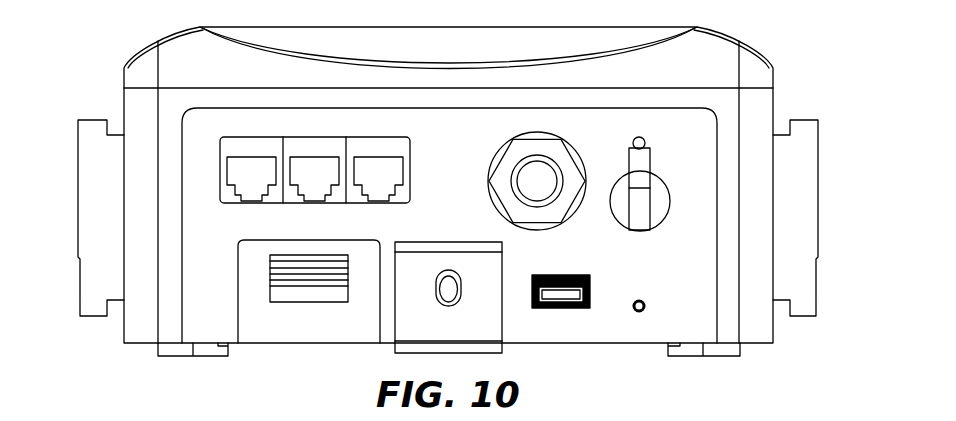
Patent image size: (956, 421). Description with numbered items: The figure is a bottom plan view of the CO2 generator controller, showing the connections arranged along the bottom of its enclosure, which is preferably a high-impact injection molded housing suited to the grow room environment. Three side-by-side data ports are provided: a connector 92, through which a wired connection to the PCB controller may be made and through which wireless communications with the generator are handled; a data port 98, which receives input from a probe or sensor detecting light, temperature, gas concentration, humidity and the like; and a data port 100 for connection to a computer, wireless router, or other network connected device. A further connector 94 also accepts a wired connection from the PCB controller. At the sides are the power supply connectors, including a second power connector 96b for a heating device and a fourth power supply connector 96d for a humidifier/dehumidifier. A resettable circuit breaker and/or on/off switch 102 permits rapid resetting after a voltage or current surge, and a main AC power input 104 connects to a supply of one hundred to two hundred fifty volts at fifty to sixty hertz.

The connector 92 is at (300, 149).
The connector 94 is at (590, 297).
The second power connector 96b is at (100, 118).
The fourth power supply connector 96d is at (796, 118).
The data port 98 is at (239, 149).
The data port 100 is at (348, 149).
The resettable circuit breaker and/or on/off switch 102 is at (650, 157).
The main AC power input 104 is at (535, 148).